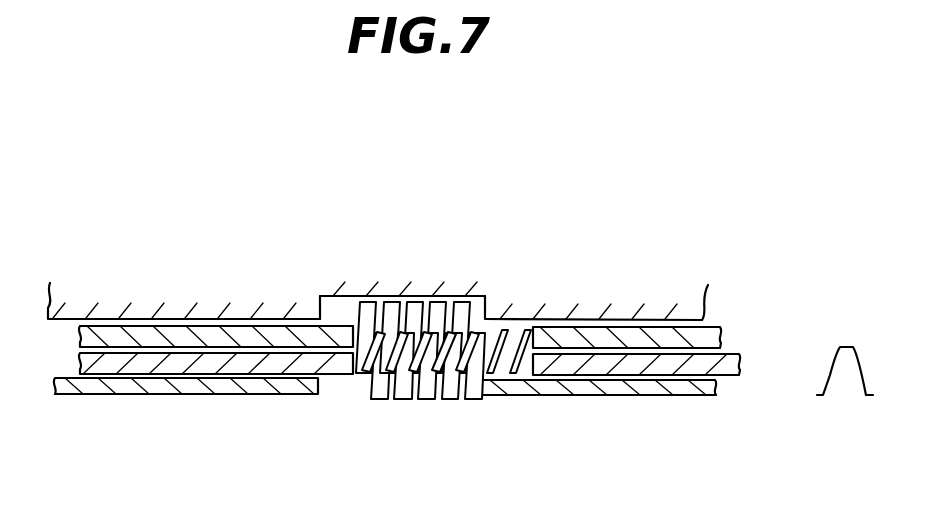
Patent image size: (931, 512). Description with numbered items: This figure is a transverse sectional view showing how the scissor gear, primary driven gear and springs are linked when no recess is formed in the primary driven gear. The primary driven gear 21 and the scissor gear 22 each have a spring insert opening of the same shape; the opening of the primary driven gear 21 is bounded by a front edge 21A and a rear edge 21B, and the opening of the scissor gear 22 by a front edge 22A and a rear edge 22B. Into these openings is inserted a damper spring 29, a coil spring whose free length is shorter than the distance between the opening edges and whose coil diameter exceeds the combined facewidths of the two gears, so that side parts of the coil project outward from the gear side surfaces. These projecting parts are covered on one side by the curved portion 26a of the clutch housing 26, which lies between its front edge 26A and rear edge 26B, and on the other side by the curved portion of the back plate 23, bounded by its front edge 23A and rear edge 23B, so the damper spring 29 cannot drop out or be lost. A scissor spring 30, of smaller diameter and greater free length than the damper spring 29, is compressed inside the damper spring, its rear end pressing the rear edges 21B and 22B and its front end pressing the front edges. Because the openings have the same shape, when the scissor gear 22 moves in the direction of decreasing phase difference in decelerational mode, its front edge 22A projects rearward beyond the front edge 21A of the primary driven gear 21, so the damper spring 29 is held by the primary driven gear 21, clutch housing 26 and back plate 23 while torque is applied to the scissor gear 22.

The clutch housing 26 is at (157, 312).
The front edge of curved portion of clutch housing 26A is at (338, 295).
The curved portion of clutch housing 26a is at (432, 294).
The rear edge of curved portion of clutch housing 26B is at (487, 295).
The primary driven gear 21 is at (78, 335).
The front edge of opening of primary driven gear 21A is at (285, 316).
The rear edge of opening of primary driven gear 21B is at (590, 312).
The scissor gear 22 is at (78, 362).
The front edge of opening of scissor gear 22A is at (367, 372).
The rear edge of opening of scissor gear 22B is at (535, 382).
The back plate 23 is at (120, 390).
The front edge of curved portion of back plate 23A is at (325, 392).
The rear edge of curved portion of back plate 23B is at (481, 398).
The damper spring 29 is at (408, 400).
The scissor spring 30 is at (447, 400).